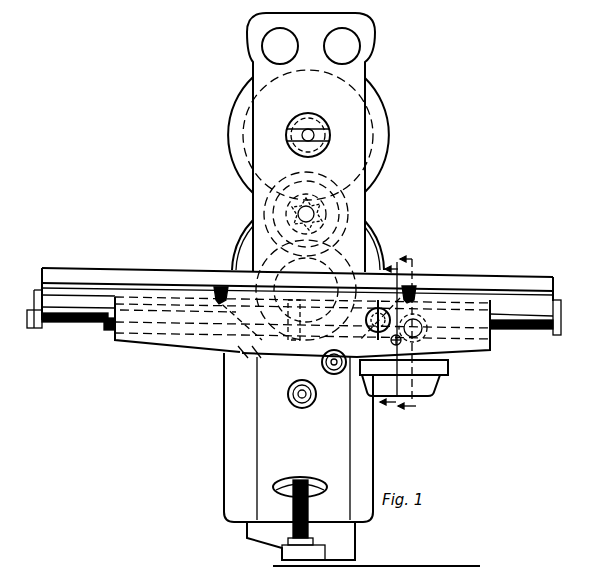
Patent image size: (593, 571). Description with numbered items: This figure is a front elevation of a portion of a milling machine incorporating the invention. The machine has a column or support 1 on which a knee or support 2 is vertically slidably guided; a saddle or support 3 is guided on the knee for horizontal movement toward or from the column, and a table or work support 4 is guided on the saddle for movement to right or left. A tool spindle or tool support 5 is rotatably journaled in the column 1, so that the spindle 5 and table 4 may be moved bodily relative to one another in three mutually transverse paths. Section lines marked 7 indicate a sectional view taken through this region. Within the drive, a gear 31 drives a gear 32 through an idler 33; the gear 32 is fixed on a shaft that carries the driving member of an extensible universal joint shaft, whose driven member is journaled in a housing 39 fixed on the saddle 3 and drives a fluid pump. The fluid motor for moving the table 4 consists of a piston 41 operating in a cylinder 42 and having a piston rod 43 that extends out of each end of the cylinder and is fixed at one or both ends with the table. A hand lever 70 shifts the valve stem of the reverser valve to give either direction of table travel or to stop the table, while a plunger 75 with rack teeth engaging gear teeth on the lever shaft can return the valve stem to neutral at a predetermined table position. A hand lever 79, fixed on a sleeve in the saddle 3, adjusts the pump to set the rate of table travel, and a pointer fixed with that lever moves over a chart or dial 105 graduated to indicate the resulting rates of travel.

The column 1 is at (366, 204).
The knee 2 is at (348, 476).
The saddle 3 is at (477, 364).
The table 4 is at (490, 278).
The tool spindle 5 is at (317, 123).
The section line 7 is at (389, 334).
The gear 31 is at (290, 262).
The gear 32 is at (356, 332).
The idler 33 is at (337, 231).
The housing 39 is at (450, 373).
The piston 41 is at (244, 327).
The cylinder 42 is at (175, 338).
The piston rod 43 is at (196, 328).
The hand lever 70 is at (378, 333).
The plunger 75 is at (395, 348).
The hand lever 79 is at (424, 336).
The chart or dial 105 is at (420, 325).